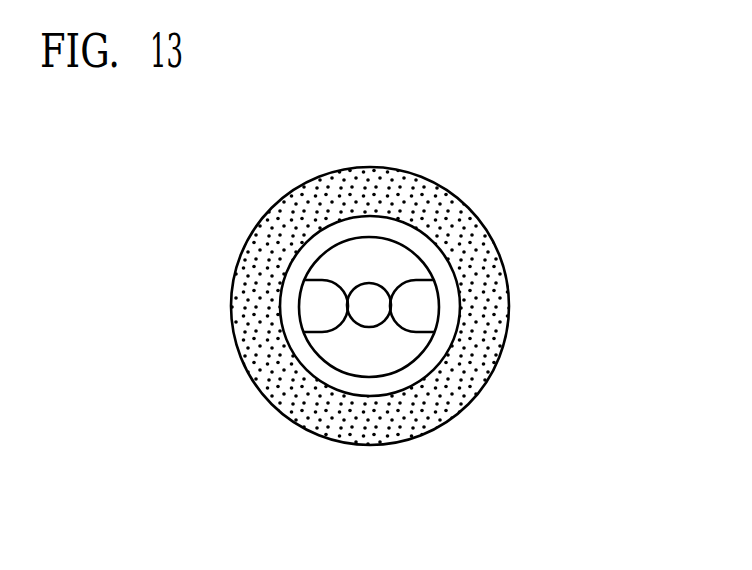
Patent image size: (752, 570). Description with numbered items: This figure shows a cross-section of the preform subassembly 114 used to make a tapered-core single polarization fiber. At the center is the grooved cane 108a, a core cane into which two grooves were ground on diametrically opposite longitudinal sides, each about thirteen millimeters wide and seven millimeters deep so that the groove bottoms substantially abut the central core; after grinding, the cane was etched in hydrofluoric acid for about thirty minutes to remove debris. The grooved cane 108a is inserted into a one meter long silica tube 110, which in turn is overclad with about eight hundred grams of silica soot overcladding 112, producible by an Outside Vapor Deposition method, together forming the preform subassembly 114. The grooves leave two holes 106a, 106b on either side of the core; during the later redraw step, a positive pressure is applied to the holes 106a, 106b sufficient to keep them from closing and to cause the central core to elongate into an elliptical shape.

The preform subassembly 114 is at (561, 174).
The silica soot overcladding 112 is at (278, 230).
The silica tube 110 is at (288, 300).
The hole 106a is at (318, 305).
The hole 106b is at (417, 307).
The grooved cane 108a is at (392, 358).